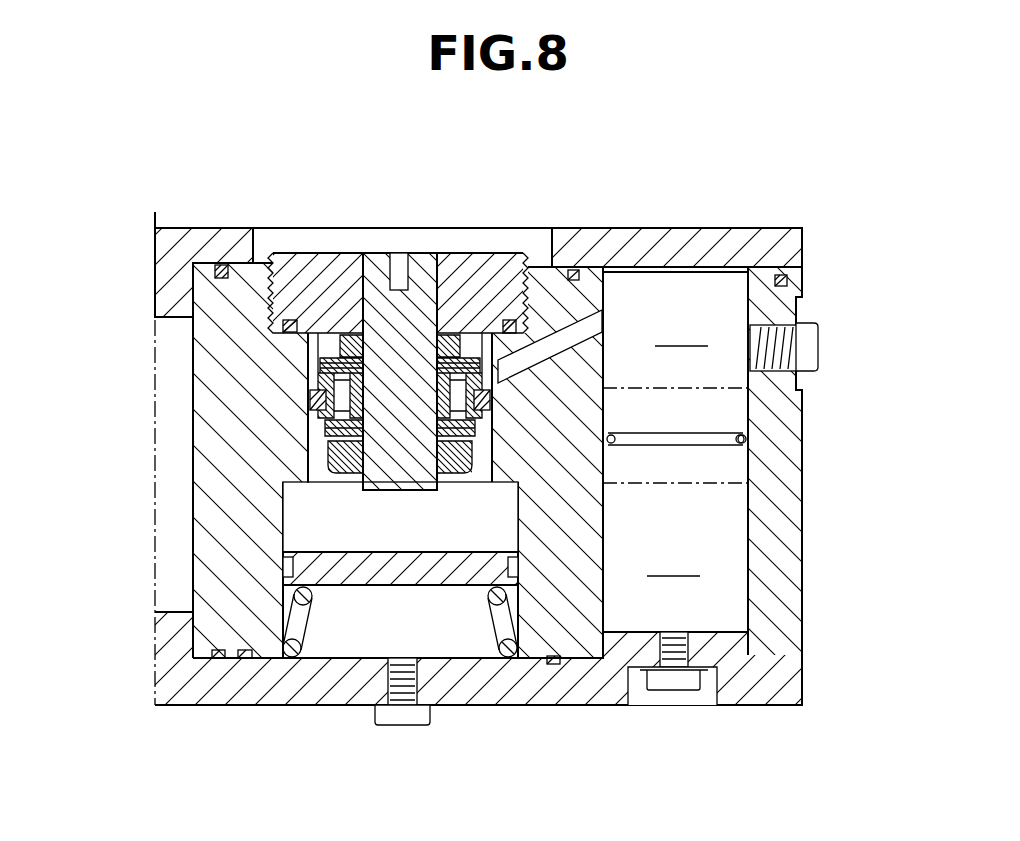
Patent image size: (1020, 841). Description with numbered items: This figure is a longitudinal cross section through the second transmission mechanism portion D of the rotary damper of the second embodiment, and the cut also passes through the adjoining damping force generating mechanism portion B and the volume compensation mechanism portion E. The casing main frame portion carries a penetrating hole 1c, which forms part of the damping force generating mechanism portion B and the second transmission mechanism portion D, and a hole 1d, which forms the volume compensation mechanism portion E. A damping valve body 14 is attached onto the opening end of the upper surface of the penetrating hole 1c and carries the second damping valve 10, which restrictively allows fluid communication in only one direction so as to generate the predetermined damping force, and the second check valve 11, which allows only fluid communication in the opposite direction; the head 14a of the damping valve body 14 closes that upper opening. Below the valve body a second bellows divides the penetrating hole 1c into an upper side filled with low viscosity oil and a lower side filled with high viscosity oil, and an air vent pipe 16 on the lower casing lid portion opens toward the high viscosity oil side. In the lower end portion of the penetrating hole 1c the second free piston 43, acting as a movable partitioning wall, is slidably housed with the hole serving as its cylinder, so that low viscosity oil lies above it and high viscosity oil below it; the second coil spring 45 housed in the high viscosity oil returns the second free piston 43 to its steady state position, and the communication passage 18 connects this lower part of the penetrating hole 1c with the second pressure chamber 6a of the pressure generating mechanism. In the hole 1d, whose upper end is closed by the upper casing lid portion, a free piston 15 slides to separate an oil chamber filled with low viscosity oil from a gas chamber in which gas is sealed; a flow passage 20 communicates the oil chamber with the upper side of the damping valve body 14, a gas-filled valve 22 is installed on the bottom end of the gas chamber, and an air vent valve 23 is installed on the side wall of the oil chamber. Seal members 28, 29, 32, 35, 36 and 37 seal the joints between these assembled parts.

The penetrating hole 1c is at (297, 505).
The hole 1d is at (742, 237).
The second pressure chamber 6a is at (162, 360).
The second damping valve 10 is at (321, 355).
The second check valve 11 is at (493, 378).
The damping valve body 14 is at (387, 323).
The head 14a is at (488, 262).
The free piston 15 is at (746, 467).
The air vent pipe 16 is at (397, 727).
The communication passage 18 is at (270, 642).
The flow passage 20 is at (612, 305).
The gas-filled valve 22 is at (688, 692).
The air vent valve 23 is at (820, 340).
The seal member 28 is at (219, 264).
The seal member 29 is at (805, 242).
The seal member 32 is at (553, 666).
The seal member 35 is at (502, 328).
The seal member 36 is at (308, 394).
The seal member 37 is at (750, 438).
The second free piston 43 is at (438, 580).
The second coil spring 45 is at (320, 600).
The damping force generating mechanism portion B is at (313, 430).
The second transmission mechanism portion D is at (372, 628).
The volume compensation mechanism portion E is at (684, 294).